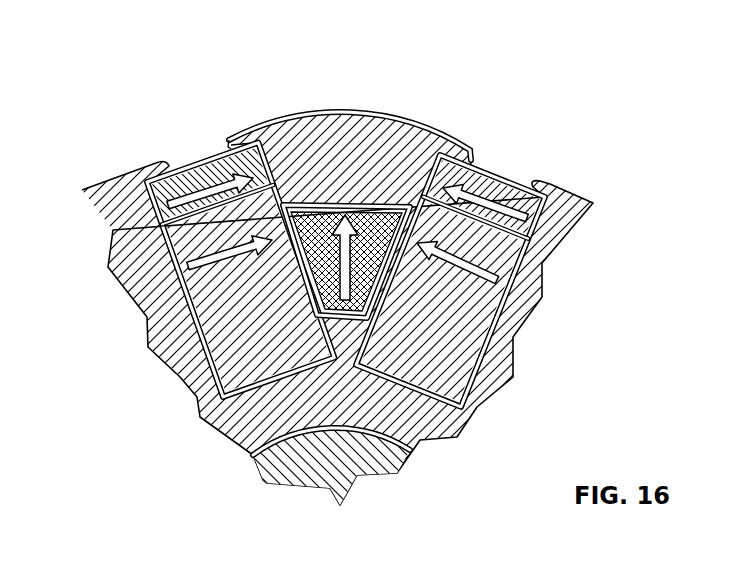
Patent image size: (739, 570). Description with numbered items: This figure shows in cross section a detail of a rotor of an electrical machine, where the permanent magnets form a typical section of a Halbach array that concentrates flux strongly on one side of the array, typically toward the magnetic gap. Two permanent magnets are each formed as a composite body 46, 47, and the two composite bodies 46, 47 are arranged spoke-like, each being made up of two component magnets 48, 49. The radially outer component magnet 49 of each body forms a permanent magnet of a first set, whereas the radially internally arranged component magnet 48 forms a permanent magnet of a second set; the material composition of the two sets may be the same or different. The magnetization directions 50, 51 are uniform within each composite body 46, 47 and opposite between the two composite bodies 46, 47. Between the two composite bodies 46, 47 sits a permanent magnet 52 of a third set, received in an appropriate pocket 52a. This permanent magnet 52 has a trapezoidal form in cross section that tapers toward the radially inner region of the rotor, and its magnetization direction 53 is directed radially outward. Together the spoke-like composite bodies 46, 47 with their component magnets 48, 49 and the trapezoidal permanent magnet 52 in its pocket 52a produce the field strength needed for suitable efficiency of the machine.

The composite body 46 is at (167, 255).
The composite body 47 is at (500, 308).
The component magnet 48 is at (460, 347).
The component magnet 49 is at (528, 207).
The magnetization direction 50 is at (492, 255).
The magnetization direction 51 is at (226, 266).
The permanent magnet 52 is at (362, 210).
The pocket 52a is at (308, 210).
The magnetization direction 53 is at (305, 263).